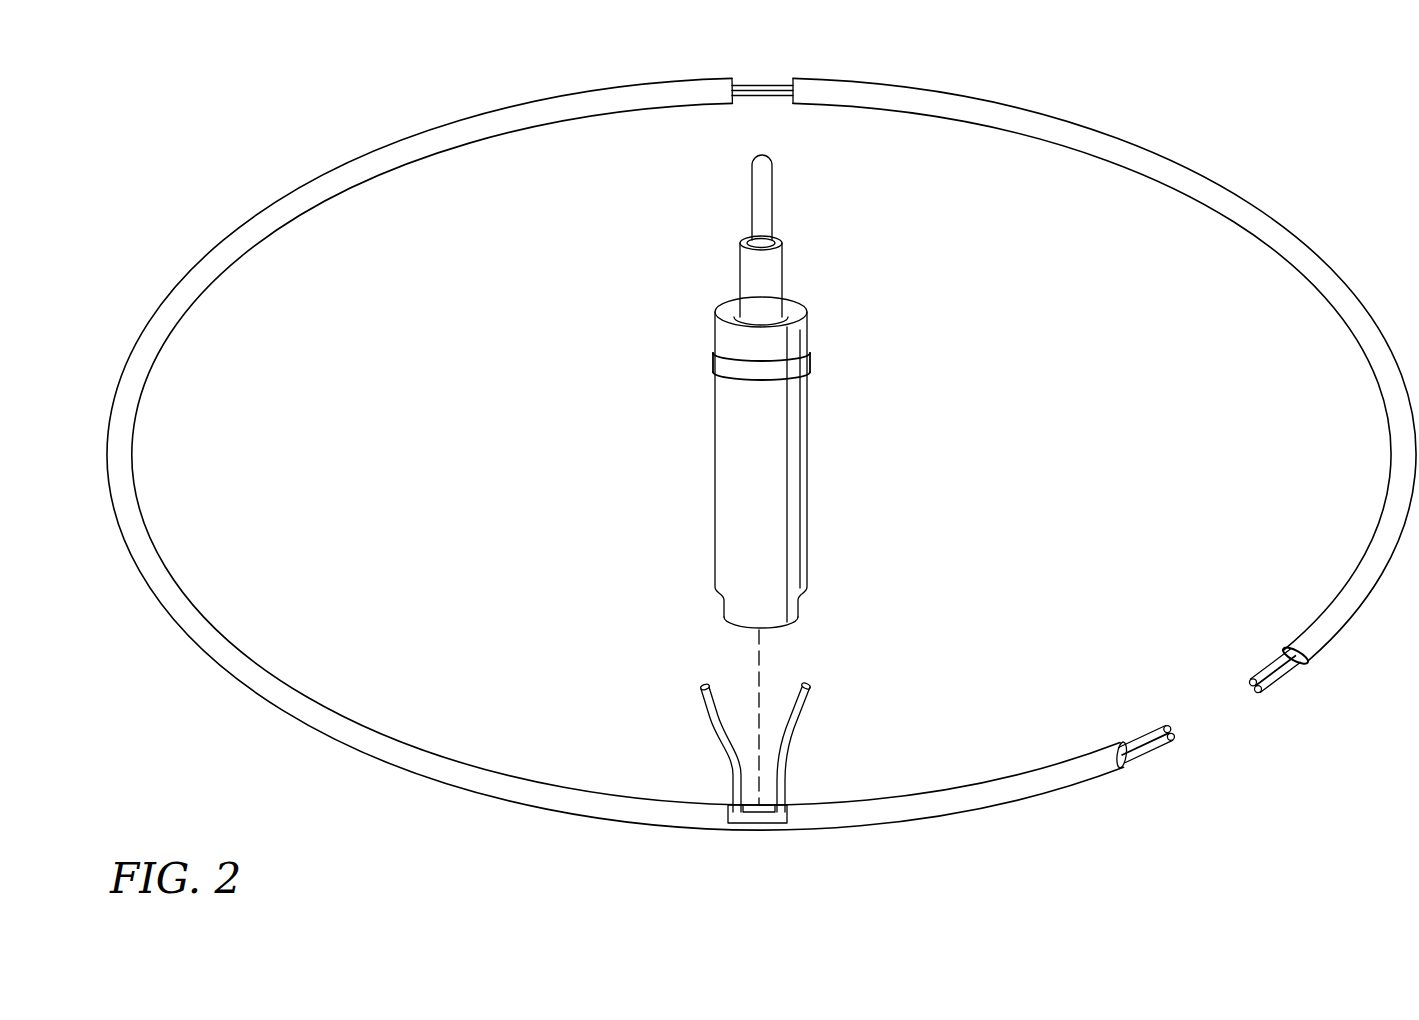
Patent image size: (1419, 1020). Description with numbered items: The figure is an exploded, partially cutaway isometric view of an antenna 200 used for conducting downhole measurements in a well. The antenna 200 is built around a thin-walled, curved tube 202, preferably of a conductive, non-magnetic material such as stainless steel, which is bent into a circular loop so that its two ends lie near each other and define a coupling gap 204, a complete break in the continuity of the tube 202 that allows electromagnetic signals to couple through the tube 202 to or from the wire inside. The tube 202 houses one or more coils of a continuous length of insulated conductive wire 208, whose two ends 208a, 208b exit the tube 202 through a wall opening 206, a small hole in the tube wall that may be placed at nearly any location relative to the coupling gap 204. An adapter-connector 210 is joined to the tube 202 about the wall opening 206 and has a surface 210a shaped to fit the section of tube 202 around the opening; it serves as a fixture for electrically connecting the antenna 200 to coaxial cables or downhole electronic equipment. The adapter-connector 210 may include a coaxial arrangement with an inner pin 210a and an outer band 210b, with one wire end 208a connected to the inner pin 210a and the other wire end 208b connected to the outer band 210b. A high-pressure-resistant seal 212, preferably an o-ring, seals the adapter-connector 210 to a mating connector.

The antenna 200 is at (282, 103).
The tube 202 is at (220, 245).
The coupling gap 204 is at (786, 66).
The wall opening 206 is at (767, 827).
The wire 208 is at (1163, 748).
The wire end 208a is at (707, 713).
The wire end 208b is at (797, 718).
The adapter-connector 210 is at (818, 480).
The inner pin 210a is at (772, 187).
The outer band 210b is at (783, 268).
The high-pressure-resistant seal 212 is at (730, 378).